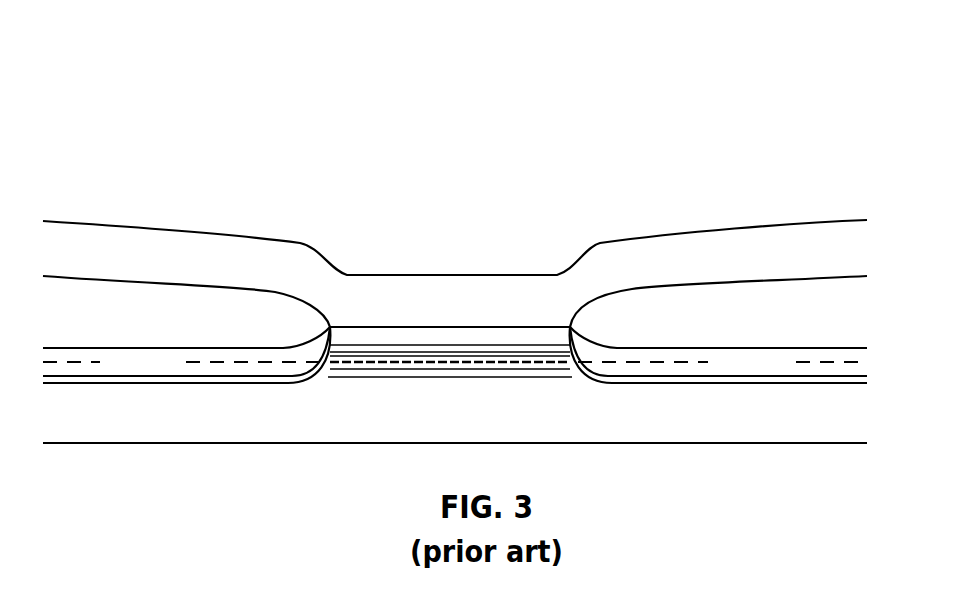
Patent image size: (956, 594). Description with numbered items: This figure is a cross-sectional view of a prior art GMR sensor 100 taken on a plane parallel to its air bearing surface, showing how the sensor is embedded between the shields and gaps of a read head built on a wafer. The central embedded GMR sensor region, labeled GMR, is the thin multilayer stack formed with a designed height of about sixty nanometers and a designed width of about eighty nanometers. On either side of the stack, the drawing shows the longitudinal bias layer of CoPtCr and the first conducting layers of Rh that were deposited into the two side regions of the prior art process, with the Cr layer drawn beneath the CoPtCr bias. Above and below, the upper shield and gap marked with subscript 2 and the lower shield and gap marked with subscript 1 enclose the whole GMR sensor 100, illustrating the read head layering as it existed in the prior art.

The GMR sensor 100 is at (291, 185).
The second shield S2 and second gap G2 2 is at (455, 271).
The first shield S1 and first gap G1 1 is at (455, 437).
The rhodium lead layer Rh is at (455, 312).
The CoPtCr hard bias layer CoPtCr is at (455, 351).
The chromium underlayer Cr is at (102, 378).
The embedded GMR sensor GMR is at (492, 338).